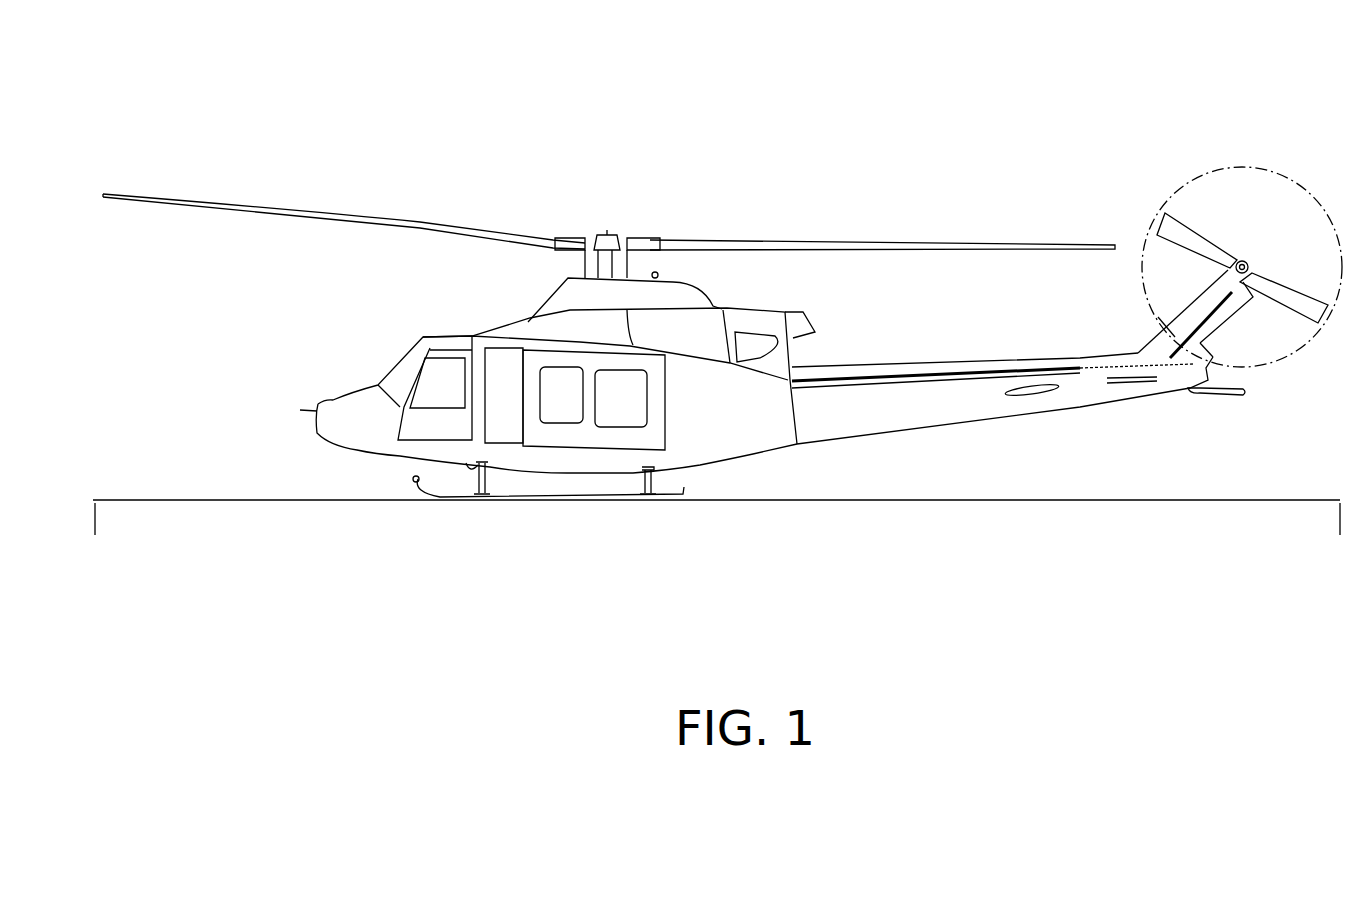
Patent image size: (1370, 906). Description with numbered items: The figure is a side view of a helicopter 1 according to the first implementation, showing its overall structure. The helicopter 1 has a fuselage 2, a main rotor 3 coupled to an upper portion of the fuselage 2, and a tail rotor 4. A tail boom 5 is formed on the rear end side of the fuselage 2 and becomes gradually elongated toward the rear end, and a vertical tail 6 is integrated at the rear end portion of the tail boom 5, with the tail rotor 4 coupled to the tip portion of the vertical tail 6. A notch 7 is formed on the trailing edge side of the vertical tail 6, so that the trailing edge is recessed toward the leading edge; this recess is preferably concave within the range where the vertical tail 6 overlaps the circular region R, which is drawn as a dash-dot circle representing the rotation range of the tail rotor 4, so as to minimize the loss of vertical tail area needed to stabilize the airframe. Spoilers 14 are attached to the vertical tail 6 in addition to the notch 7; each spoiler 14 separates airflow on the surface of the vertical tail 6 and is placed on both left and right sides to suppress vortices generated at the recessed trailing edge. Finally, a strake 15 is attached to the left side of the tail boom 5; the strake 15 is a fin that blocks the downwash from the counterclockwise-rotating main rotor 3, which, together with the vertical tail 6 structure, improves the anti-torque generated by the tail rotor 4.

The helicopter 1 is at (300, 152).
The fuselage 2 is at (368, 388).
The main rotor 3 is at (878, 240).
The tail rotor 4 is at (1162, 215).
The tail boom 5 is at (1050, 412).
The vertical tail 6 is at (1185, 305).
The notch 7 is at (1227, 323).
The spoiler 14 is at (1180, 317).
The strake 15 is at (877, 380).
The circular region R is at (1295, 353).